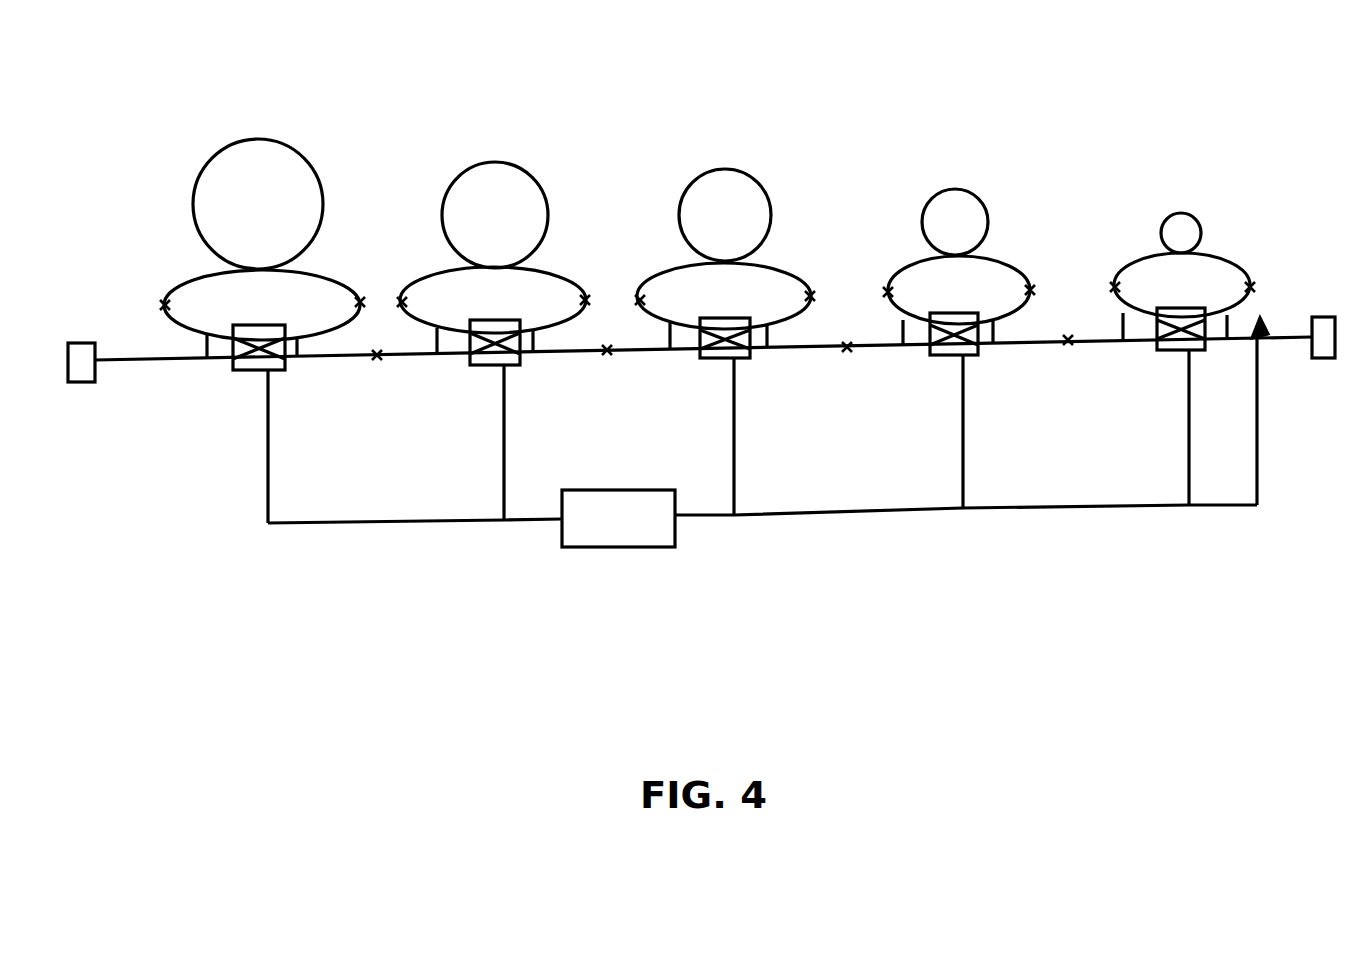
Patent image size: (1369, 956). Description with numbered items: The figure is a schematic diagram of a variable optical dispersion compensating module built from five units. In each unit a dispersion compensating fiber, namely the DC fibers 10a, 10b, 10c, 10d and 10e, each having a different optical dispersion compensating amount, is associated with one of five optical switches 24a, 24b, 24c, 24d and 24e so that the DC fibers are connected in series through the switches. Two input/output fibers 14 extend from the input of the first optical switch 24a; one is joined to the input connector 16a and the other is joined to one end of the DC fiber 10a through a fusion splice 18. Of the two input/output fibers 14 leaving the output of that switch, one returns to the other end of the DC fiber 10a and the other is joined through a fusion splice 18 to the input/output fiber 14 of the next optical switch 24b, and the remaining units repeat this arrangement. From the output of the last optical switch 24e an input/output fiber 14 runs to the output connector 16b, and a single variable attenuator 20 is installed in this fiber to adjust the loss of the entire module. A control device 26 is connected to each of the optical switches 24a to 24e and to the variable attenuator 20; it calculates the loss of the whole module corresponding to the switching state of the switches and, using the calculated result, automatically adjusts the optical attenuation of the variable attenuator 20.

The DC fiber 10a is at (258, 138).
The DC fiber 10b is at (495, 162).
The DC fiber 10c is at (725, 169).
The DC fiber 10d is at (957, 189).
The DC fiber 10e is at (1183, 213).
The input/output fiber 14 is at (207, 359).
The input connector 16a is at (83, 343).
The output connector 16b is at (1322, 317).
The fusion splice 18 is at (163, 303).
The variable attenuator 20 is at (1265, 343).
The optical switch 24a is at (247, 370).
The optical switch 24b is at (483, 365).
The optical switch 24c is at (713, 358).
The optical switch 24d is at (940, 355).
The optical switch 24e is at (1167, 350).
The control device 26 is at (615, 548).